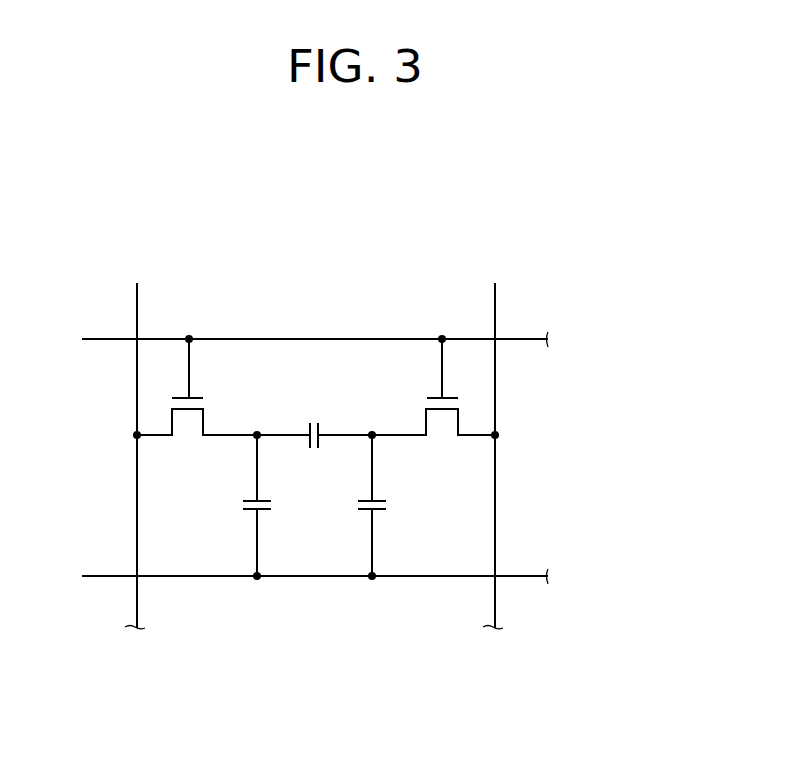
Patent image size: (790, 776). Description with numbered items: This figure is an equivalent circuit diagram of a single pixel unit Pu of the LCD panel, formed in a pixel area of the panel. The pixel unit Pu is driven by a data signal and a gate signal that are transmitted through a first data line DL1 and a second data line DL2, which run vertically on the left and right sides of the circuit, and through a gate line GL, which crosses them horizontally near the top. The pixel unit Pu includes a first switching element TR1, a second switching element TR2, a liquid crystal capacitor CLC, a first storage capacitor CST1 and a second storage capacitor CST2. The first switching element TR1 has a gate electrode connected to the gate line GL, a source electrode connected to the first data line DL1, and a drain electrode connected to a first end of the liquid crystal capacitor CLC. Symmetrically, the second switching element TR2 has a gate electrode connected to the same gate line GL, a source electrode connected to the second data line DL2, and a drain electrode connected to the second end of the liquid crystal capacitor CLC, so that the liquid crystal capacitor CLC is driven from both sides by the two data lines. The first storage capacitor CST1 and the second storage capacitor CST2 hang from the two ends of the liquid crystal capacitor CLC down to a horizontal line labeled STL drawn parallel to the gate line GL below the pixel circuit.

The pixel unit Pu is at (316, 257).
The first data line DL1 is at (137, 299).
The second data line DL2 is at (495, 302).
The gate line GL is at (101, 341).
The storage line STL is at (101, 578).
The first switching element TR1 is at (197, 385).
The second switching element TR2 is at (433, 385).
The liquid crystal capacitor CLC is at (316, 423).
The first storage capacitor CST1 is at (230, 507).
The second storage capacitor CST2 is at (399, 507).